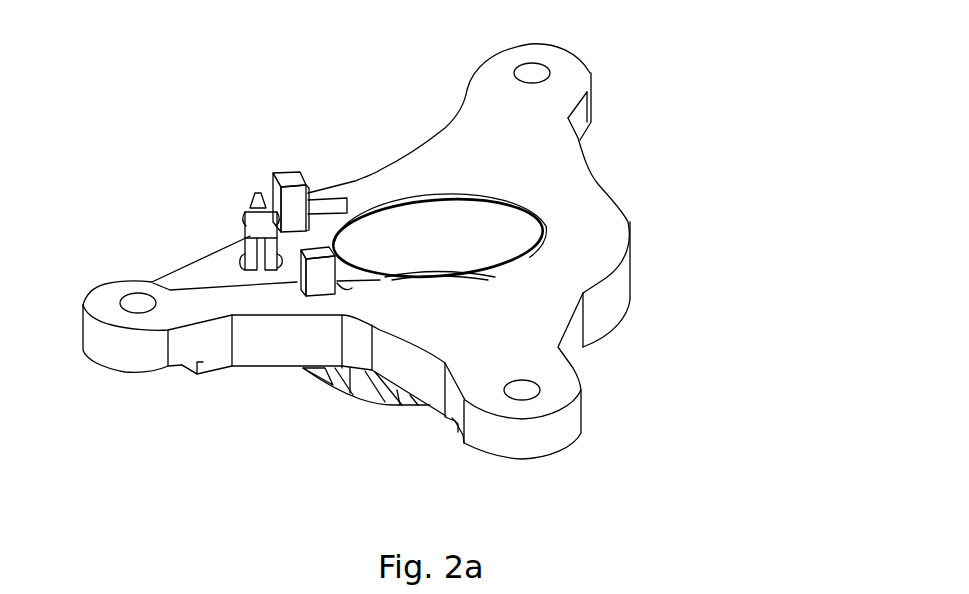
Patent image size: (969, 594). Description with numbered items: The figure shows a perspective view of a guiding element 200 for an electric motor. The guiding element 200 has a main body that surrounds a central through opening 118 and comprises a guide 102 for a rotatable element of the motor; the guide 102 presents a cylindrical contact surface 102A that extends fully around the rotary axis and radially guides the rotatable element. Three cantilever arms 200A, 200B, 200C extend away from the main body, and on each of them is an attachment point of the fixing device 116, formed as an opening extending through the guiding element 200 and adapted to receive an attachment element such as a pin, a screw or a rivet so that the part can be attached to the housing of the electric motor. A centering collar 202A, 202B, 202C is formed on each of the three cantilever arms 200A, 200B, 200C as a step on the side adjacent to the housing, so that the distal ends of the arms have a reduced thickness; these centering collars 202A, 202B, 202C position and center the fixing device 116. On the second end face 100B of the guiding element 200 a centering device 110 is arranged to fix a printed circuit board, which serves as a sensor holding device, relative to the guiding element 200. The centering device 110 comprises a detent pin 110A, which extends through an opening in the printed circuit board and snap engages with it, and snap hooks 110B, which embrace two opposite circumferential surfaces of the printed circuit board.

The guiding element 200 is at (203, 80).
The cantilever arm 200A is at (626, 96).
The cantilever arm 200B is at (618, 418).
The cantilever arm 200C is at (140, 404).
The centering collar 202A is at (582, 145).
The centering collar 202B is at (460, 436).
The centering collar 202C is at (185, 374).
The second end face 100B is at (567, 268).
The guide 102 is at (362, 388).
The contact surface 102A is at (402, 244).
The centering device 110 is at (303, 139).
The detent pin 110A is at (247, 238).
The snap hook 110B is at (337, 282).
The fixing device 116 is at (532, 72).
The through opening 118 is at (441, 182).